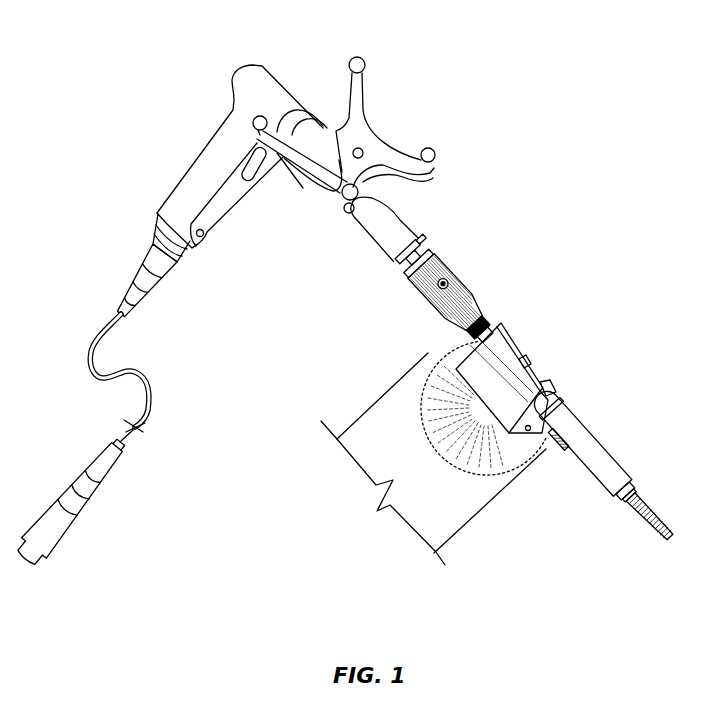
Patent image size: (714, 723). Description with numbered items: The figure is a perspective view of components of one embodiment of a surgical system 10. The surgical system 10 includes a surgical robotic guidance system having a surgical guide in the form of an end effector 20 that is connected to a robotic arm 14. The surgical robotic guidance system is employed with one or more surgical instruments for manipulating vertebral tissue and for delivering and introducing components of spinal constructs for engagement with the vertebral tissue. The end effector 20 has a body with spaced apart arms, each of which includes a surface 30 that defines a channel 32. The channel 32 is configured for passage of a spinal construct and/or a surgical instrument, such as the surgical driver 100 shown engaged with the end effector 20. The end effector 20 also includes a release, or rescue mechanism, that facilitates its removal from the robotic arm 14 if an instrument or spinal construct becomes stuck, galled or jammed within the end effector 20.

The surgical system 10 is at (157, 36).
The surgical driver 100 is at (503, 274).
The end effector 20 is at (510, 346).
The surface 30 is at (558, 397).
The channel 32 is at (564, 403).
The robotic arm 14 is at (456, 498).